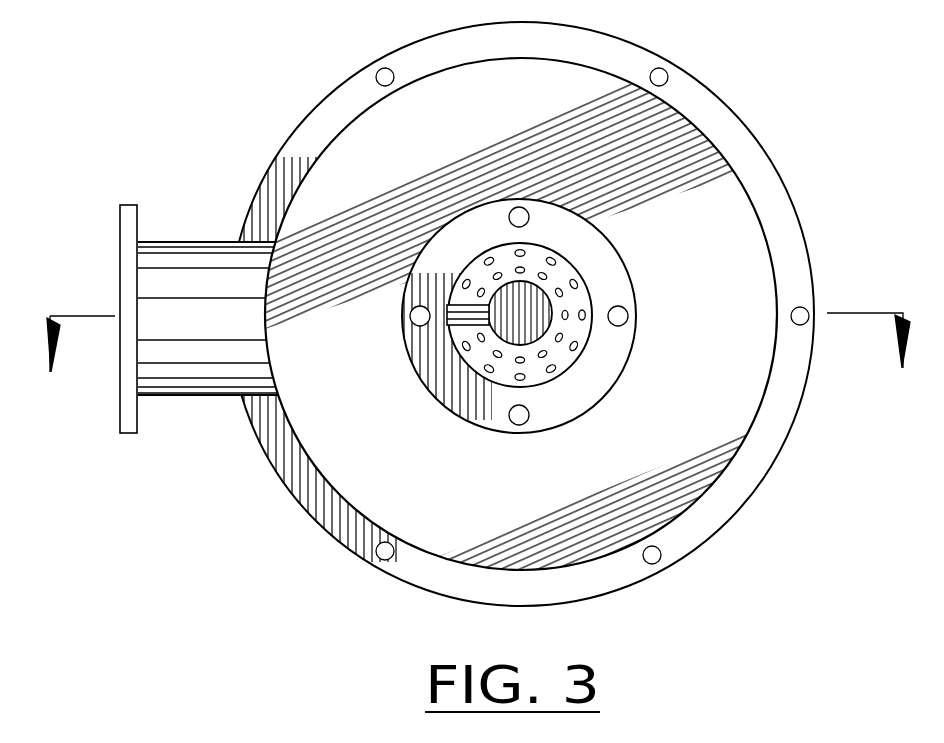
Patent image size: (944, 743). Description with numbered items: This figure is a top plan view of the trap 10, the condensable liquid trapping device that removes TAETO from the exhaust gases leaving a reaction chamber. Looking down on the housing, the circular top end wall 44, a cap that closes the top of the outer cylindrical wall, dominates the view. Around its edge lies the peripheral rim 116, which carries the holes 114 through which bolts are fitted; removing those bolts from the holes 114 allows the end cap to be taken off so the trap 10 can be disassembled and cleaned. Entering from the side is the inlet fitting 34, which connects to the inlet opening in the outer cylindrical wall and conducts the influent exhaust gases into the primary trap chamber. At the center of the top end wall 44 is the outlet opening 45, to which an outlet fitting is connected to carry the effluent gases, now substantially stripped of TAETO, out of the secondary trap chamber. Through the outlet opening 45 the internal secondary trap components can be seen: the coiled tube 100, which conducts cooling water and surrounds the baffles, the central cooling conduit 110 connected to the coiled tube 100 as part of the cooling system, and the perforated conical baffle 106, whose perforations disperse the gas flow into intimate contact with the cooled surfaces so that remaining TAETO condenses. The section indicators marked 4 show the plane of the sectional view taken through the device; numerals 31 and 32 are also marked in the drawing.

The trap 10 is at (234, 108).
The pipe flange 31 is at (120, 222).
The inlet fitting 34 is at (188, 240).
The coiled tube 100 is at (447, 303).
The central cooling conduit 110 is at (525, 280).
The top end wall 44 is at (620, 112).
The hub 32 is at (633, 272).
The outlet opening 45 is at (463, 360).
The perforated conical baffle 106 is at (565, 353).
The peripheral rim 116 is at (504, 314).
The holes 114 is at (663, 557).
The section line 4- 4 is at (473, 369).